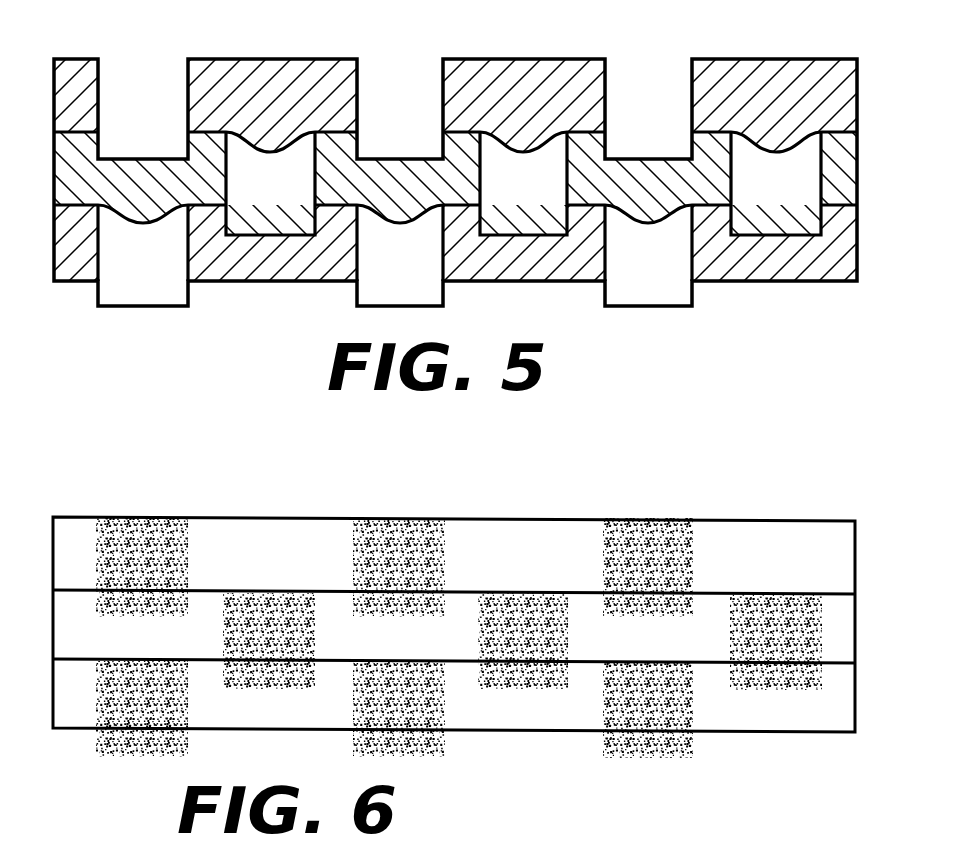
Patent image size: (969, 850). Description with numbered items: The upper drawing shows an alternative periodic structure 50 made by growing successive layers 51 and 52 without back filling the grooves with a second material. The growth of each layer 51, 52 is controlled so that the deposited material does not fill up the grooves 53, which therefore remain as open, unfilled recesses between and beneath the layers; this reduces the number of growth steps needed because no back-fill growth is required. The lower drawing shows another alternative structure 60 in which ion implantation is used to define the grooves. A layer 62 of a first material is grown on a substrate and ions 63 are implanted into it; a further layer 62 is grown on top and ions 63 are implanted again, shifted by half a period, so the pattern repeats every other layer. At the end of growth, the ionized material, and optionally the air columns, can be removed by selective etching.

In FIG. 5, the structure 50 is at (472, 154).
In FIG. 5, the layer 51 is at (835, 247).
In FIG. 5, the layer 52 is at (835, 160).
In FIG. 5, the grooves 53 is at (793, 195).
In FIG. 6, the structure 60 is at (454, 632).
In FIG. 6, the layer 62 is at (282, 705).
In FIG. 6, the ions 63 is at (142, 708).